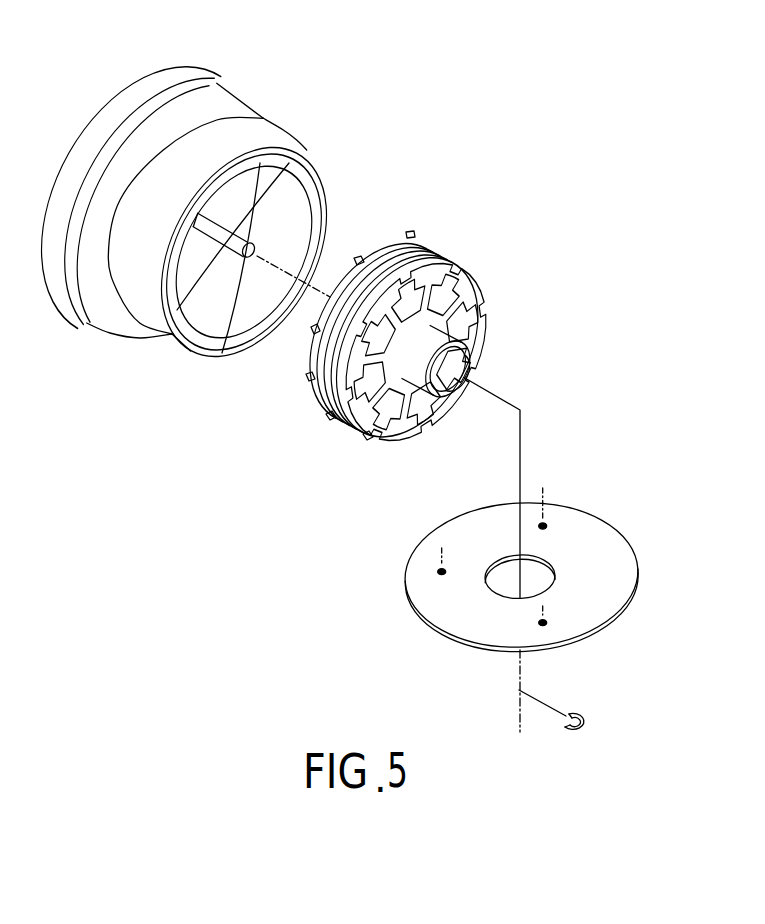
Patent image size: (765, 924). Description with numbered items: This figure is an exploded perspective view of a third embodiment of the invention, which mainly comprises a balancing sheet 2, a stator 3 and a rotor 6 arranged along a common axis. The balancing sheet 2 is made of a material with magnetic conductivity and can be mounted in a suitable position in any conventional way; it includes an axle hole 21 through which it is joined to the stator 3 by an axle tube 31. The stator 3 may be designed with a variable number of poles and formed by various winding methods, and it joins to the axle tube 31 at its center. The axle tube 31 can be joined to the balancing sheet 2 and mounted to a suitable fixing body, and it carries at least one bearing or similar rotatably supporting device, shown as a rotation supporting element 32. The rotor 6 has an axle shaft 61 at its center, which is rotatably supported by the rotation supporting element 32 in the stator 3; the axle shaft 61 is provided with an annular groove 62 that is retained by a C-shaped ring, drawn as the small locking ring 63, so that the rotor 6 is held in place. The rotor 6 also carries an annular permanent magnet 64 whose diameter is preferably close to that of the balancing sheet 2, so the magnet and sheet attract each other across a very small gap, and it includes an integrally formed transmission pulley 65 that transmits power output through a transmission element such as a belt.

The rotor 6 is at (264, 122).
The transmission pulley 65 is at (118, 96).
The annular permanent magnet 64 is at (183, 337).
The annular groove 62 is at (226, 336).
The axle shaft 61 is at (218, 232).
The stator 3 is at (478, 288).
The axle tube 31 is at (412, 375).
The rotation supporting element 32 is at (472, 357).
The balancing sheet 2 is at (436, 605).
The axle hole 21 is at (543, 573).
The retaining clip 63 is at (583, 735).